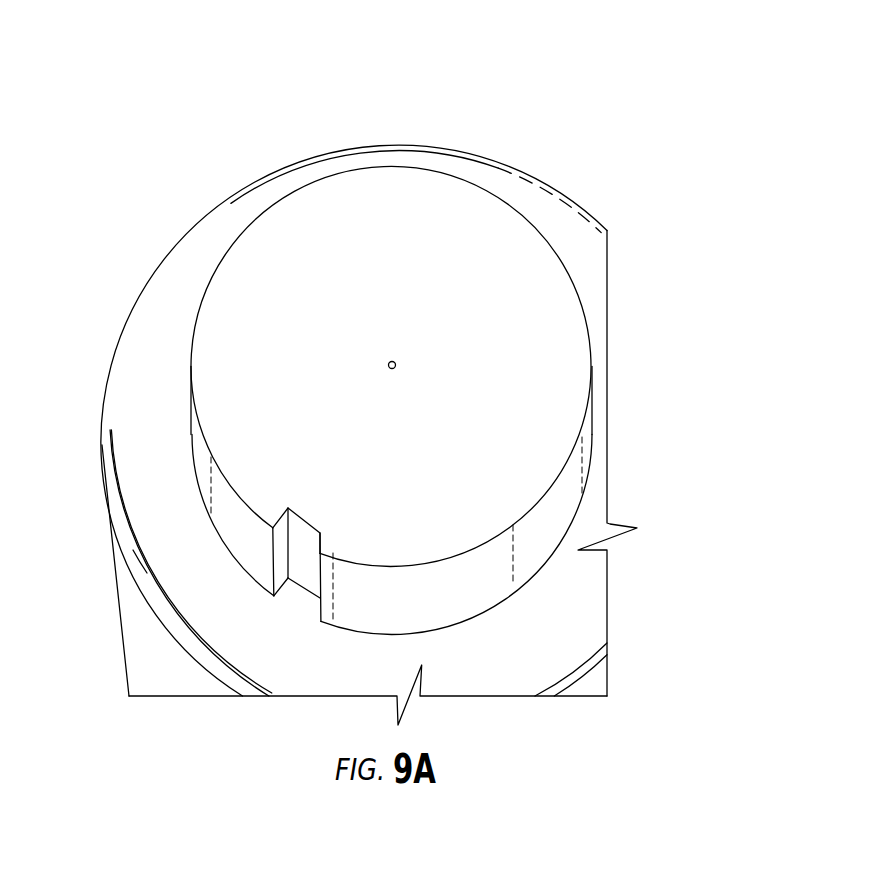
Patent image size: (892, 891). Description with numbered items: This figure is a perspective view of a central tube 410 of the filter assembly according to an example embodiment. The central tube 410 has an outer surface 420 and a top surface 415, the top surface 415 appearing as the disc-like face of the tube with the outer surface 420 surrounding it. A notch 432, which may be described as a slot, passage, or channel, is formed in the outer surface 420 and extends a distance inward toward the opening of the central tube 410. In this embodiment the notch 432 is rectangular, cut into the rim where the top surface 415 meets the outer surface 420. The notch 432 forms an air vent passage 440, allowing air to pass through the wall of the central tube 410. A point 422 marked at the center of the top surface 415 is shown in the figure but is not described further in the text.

The central tube 410 is at (190, 114).
The top surface 415 is at (446, 185).
The outer surface 420 is at (190, 389).
The center point / pivot 422 is at (395, 361).
The notch 432 is at (321, 536).
The air vent passage 440 is at (297, 507).